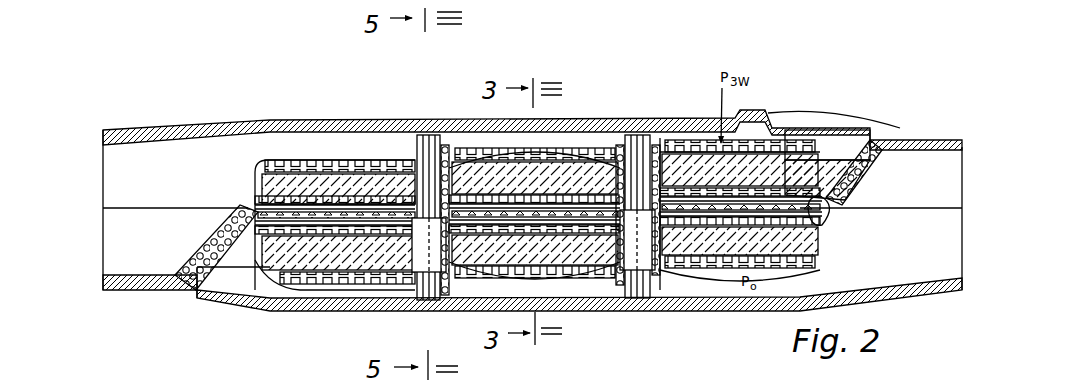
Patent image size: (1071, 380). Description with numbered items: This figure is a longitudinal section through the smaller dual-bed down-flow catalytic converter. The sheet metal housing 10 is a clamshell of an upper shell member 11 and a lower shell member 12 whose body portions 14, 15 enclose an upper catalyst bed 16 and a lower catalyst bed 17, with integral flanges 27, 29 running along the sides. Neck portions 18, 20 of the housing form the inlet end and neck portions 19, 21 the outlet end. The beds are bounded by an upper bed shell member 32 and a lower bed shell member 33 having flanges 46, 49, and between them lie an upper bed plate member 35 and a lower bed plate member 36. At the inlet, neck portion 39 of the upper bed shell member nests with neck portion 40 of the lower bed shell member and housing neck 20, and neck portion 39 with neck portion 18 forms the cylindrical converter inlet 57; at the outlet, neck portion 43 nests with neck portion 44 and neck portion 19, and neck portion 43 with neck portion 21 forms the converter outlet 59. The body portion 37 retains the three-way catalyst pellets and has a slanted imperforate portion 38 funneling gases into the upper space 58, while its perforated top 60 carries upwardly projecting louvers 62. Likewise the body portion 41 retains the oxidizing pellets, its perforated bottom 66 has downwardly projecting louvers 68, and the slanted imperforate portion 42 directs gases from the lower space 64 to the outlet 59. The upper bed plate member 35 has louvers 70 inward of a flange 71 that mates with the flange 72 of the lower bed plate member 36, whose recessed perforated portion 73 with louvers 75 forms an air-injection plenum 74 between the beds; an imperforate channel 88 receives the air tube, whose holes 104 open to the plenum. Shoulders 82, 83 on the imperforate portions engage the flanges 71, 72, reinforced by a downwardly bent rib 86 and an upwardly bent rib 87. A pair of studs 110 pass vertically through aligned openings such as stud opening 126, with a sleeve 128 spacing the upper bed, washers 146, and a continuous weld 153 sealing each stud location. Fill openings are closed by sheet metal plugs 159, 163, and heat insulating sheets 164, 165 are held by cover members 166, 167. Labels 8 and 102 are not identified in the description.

The sheet metal housing 10 is at (136, 160).
The neck portion 18 is at (126, 147).
The flange 27 is at (164, 213).
The shoulder 82 is at (245, 195).
The body portion 37 is at (250, 150).
The imperforate portion 38 is at (200, 188).
The upper catalyst bed 16 is at (276, 163).
The peripheral flange 71 is at (266, 200).
The perforated top 60 is at (282, 208).
The louvers 62 is at (330, 215).
The stud opening 126 is at (406, 152).
The continuous weld 153 is at (410, 148).
The upper bed plate member 35 is at (470, 160).
The upper space 58 is at (498, 143).
The upper bed shell member 32 is at (538, 150).
The upper cover member 166 is at (578, 118).
The sleeve 128 is at (392, 183).
The upper shell member 11 is at (622, 150).
The heat insulating sheet 164 is at (688, 124).
The body portion 14 is at (753, 120).
The holes 104 is at (790, 157).
The sheet metal plug 159 is at (766, 206).
The upwardly bent rib 87 is at (841, 187).
The neck portion 44 is at (907, 140).
The neck portion 19 is at (934, 140).
The neck portion 43 is at (964, 145).
The imperforate portion 42 is at (878, 160).
The flange 49 is at (870, 172).
The peripheral flange 72 is at (822, 210).
The shoulder 83 is at (818, 222).
The flange 29 is at (922, 207).
The imperforate channel 88 is at (812, 243).
The lower catalyst bed 17 is at (822, 243).
The body portion 41 is at (826, 227).
The neck portion 21 is at (926, 290).
The converter outlet 59 is at (937, 253).
The lower cover member 167 is at (892, 290).
The louvers 75 is at (556, 290).
The lower shell member 12 is at (680, 291).
The perforated bottom 66 is at (727, 258).
The louvers 68 is at (778, 258).
The heat insulating sheet 165 is at (335, 292).
The body portion 15 is at (362, 293).
The washer 146 is at (405, 290).
The lower bed shell member 33 is at (483, 278).
The lower space 64 is at (507, 291).
The perforated portion 73 is at (330, 250).
The stud 110 is at (416, 244).
The lower bed plate member 36 is at (467, 233).
The plenum 74 is at (488, 205).
The element 8 is at (553, 196).
The bearing 102 is at (555, 203).
The louvers 70 is at (700, 196).
The neck portion 20 is at (118, 288).
The neck portion 40 is at (137, 290).
The converter inlet 57 is at (163, 290).
The neck portion 39 is at (143, 290).
The sheet metal plug 163 is at (226, 275).
The flange 46 is at (180, 280).
The downwardly bent rib 86 is at (233, 267).